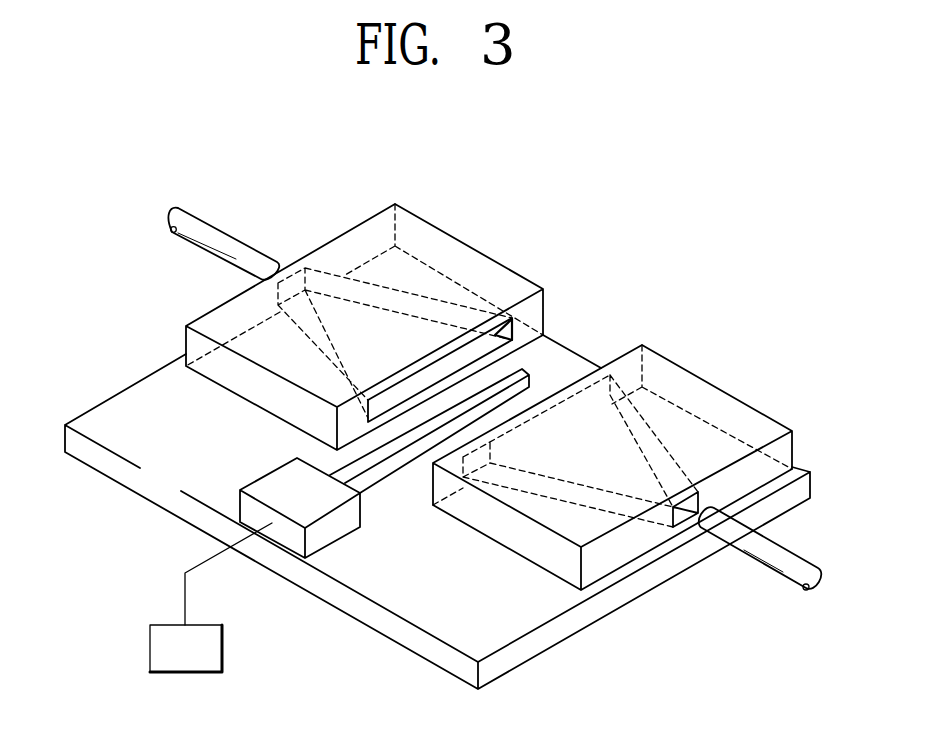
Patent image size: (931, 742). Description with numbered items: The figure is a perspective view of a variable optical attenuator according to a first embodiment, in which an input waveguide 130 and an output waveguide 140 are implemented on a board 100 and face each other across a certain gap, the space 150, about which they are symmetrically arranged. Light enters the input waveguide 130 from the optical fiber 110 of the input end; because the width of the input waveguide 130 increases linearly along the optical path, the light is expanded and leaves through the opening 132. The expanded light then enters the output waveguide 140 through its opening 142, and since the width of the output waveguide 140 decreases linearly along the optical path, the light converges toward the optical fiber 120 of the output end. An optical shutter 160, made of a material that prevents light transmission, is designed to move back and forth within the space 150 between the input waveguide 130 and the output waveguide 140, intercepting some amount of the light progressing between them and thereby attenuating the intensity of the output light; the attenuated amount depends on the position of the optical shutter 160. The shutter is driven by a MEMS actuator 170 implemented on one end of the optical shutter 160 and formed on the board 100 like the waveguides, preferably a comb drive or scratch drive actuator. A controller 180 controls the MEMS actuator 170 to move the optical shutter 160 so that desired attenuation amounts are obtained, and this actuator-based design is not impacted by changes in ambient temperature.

The board 100 is at (141, 408).
The optical fiber of the input end 110 is at (216, 233).
The optical fiber of the output end 120 is at (779, 574).
The input waveguide 130 is at (444, 300).
The opening 132 is at (490, 346).
The output waveguide 140 is at (662, 430).
The opening 142 is at (568, 412).
The space 150 is at (553, 354).
The optical shutter 160 is at (381, 474).
The MEMS actuator 170 is at (328, 530).
The controller 180 is at (150, 646).